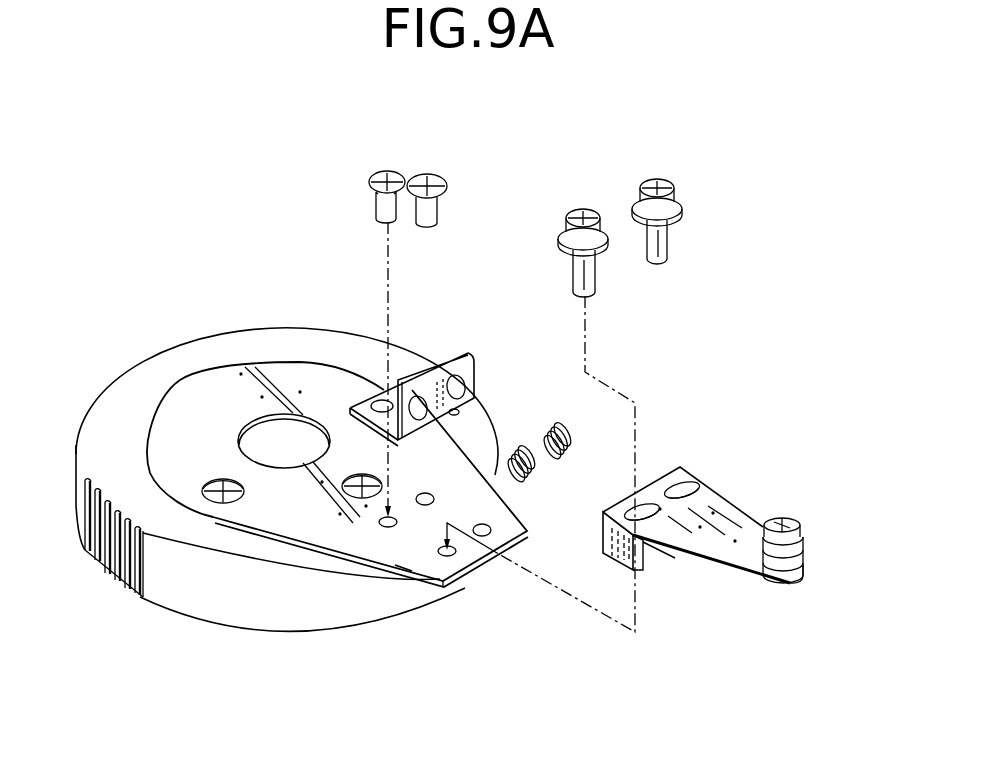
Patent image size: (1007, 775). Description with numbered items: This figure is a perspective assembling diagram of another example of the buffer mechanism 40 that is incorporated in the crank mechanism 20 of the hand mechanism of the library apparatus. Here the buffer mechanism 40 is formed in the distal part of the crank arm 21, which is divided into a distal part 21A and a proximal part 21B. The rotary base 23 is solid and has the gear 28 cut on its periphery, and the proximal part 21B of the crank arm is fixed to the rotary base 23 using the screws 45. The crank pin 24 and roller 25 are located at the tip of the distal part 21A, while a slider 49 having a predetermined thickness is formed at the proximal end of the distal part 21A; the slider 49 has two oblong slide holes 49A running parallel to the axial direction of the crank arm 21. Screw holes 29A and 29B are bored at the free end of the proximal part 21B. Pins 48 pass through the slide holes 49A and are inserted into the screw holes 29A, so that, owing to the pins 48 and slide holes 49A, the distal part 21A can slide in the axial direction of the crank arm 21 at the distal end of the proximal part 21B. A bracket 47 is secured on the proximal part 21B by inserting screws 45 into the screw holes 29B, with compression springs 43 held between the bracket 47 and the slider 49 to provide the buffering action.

The crank mechanism 20 is at (755, 164).
The crank arm 21 is at (337, 386).
The distal part of the crank arm 21A is at (747, 553).
The proximal part of the crank arm 21B is at (403, 556).
The rotary base 23 is at (155, 378).
The crank pin 24 is at (783, 520).
The roller 25 is at (800, 547).
The gear 28 is at (104, 578).
The screw holes 29A is at (444, 556).
The screw holes 29B is at (383, 524).
The buffer mechanism 40 is at (547, 658).
The compression springs 43 is at (510, 446).
The screws 45 is at (437, 174).
The bracket 47 is at (470, 354).
The pins 48 is at (658, 180).
The slider 49 is at (652, 557).
The slide holes 49A is at (687, 485).